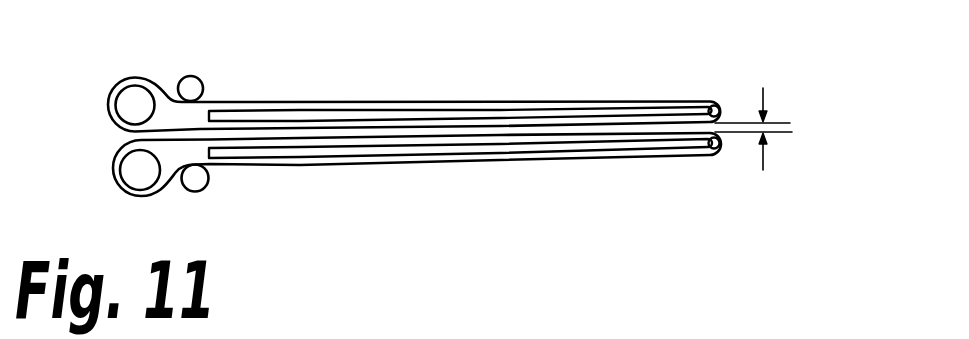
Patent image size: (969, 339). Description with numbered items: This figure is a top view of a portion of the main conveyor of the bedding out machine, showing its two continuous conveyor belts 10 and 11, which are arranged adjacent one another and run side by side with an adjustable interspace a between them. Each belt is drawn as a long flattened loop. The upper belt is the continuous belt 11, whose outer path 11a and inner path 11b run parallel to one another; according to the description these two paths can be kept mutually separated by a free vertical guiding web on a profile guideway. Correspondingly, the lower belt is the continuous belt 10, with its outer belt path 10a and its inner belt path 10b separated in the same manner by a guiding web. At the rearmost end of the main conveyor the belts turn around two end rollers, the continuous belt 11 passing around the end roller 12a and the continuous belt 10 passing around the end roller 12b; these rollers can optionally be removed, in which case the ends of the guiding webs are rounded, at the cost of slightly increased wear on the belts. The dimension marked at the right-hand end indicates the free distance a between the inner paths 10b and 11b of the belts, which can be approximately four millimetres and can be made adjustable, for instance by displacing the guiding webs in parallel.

The continuous conveyor belt 10 is at (464, 192).
The outer belt path 10a is at (253, 166).
The inner belt path 10b is at (298, 147).
The continuous conveyor belt 11 is at (446, 66).
The outer path 11a is at (338, 101).
The inner path 11b is at (382, 130).
The end roller 12a is at (721, 104).
The end roller 12b is at (721, 147).
The interspace a is at (790, 127).